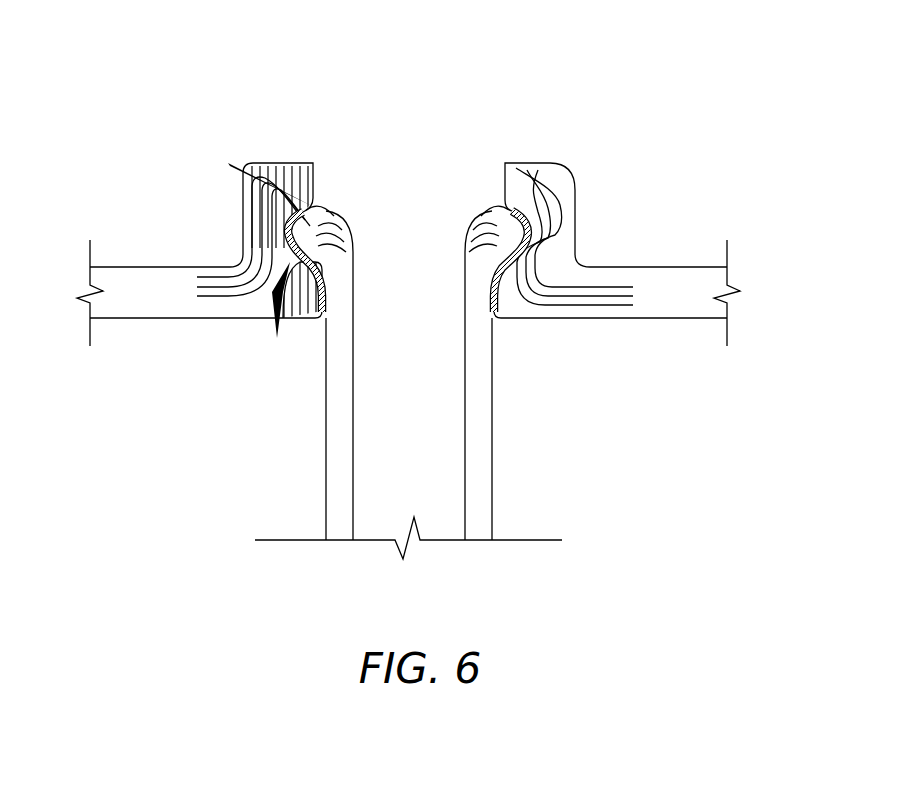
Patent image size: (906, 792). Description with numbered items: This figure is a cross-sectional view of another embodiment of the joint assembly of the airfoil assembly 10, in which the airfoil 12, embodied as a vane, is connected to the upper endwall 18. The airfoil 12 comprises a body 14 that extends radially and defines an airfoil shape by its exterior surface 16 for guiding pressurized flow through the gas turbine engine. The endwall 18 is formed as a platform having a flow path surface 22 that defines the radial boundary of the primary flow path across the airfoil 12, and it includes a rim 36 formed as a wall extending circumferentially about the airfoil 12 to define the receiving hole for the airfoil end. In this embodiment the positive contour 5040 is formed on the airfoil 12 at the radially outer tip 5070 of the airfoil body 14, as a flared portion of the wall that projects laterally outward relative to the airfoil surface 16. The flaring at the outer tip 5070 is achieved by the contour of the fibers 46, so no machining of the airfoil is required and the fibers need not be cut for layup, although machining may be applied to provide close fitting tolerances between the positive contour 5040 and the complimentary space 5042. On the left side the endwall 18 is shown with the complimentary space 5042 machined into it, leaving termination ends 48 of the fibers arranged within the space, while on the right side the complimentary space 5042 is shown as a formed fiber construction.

The airfoil assembly 10 is at (614, 104).
The airfoil 12 is at (417, 385).
The body 14 is at (336, 518).
The exterior surface 16 is at (493, 452).
The endwall 18 is at (393, 277).
The flow path surface 22 is at (148, 320).
The rim 36 is at (387, 212).
The fibers 46 is at (308, 262).
The termination ends 48 is at (316, 192).
The positive contour 5040 is at (338, 252).
The complimentary space 5042 is at (263, 232).
The radially outer tip 5070 is at (332, 200).